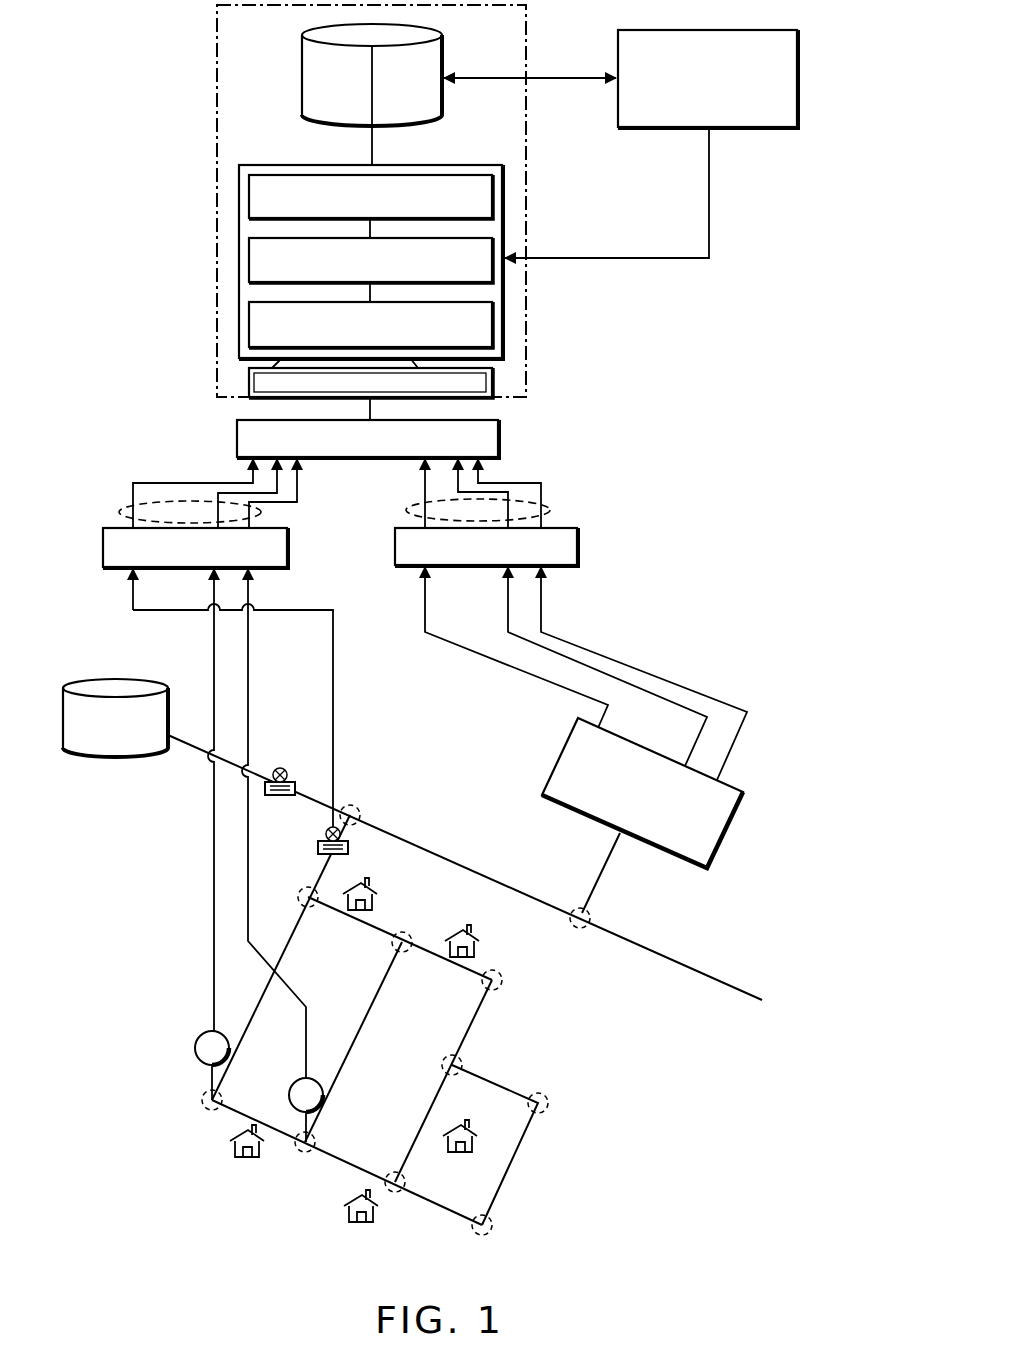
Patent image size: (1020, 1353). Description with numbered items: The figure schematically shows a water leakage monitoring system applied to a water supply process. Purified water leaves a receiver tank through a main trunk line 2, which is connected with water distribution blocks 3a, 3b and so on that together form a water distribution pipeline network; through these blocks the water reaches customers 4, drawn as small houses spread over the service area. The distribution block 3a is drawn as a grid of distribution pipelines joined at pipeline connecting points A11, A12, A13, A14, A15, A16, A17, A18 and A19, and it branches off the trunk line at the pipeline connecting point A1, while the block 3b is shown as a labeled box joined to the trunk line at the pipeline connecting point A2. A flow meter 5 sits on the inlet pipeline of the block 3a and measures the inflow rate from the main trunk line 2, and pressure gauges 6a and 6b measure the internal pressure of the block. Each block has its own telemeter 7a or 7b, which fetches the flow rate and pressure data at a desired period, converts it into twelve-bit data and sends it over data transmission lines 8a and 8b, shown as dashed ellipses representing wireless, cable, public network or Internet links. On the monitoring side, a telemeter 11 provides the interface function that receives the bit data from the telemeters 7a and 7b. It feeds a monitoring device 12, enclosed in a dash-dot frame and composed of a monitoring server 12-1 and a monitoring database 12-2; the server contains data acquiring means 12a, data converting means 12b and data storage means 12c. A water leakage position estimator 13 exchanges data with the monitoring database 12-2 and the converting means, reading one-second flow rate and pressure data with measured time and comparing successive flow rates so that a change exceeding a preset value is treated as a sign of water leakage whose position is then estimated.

The main trunk line 2 is at (445, 856).
The water distribution block 3a is at (524, 1034).
The water distribution block 3b is at (735, 822).
The customers 4 is at (378, 898).
The flow meter 5 is at (347, 848).
The pressure gauge 6a is at (203, 1033).
The pressure gauge 6b is at (296, 1080).
The telemeter 7a is at (103, 548).
The telemeter 7b is at (640, 547).
The data transmission line 8a is at (120, 512).
The data transmission line 8b is at (550, 512).
The telemeter 11 is at (498, 440).
The monitoring device 12 is at (526, 312).
The monitoring server 12-1 is at (239, 258).
The monitoring database 12-2 is at (302, 80).
The data acquiring means 12a is at (492, 333).
The data converting means 12b is at (492, 272).
The data storage means 12c is at (492, 195).
The water leakage position estimator 13 is at (797, 88).
The pipeline connecting point A1 is at (350, 804).
The pipeline connecting point A2 is at (592, 912).
The pipeline connecting point A11 is at (300, 887).
The pipeline connecting point A12 is at (200, 1108).
The pipeline connecting point A13 is at (411, 933).
The pipeline connecting point A14 is at (317, 1138).
The pipeline connecting point A15 is at (504, 978).
The pipeline connecting point A16 is at (464, 1063).
The pipeline connecting point A17 is at (398, 1194).
The pipeline connecting point A18 is at (550, 1103).
The pipeline connecting point A19 is at (494, 1222).